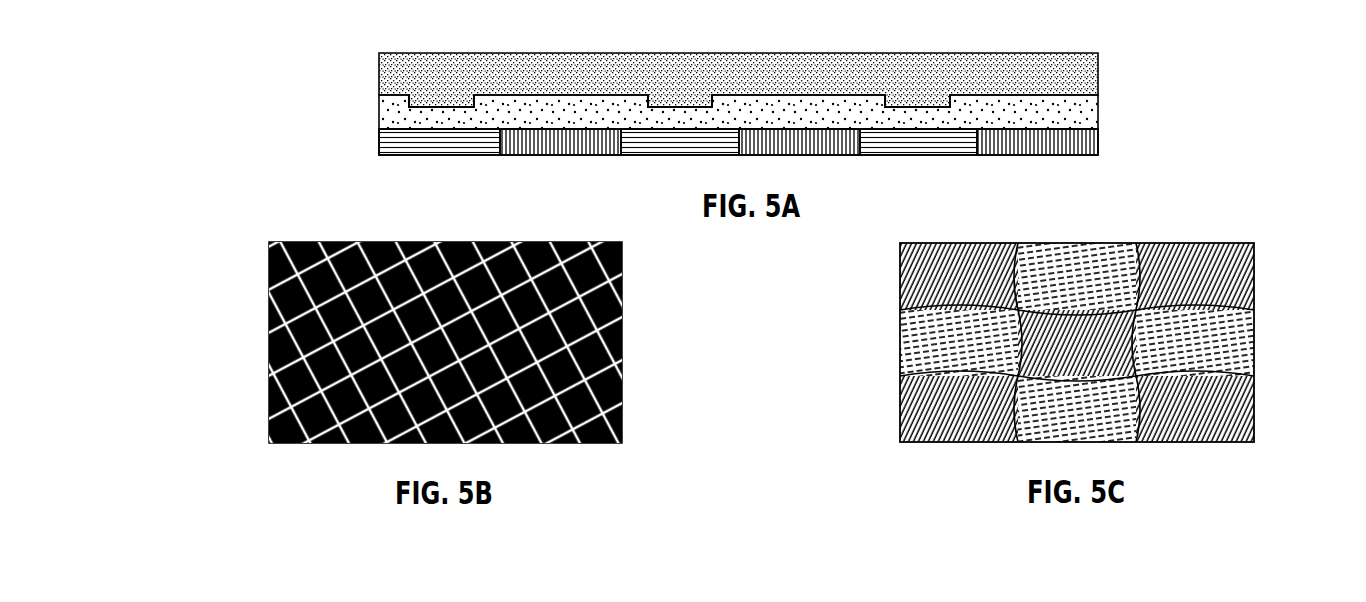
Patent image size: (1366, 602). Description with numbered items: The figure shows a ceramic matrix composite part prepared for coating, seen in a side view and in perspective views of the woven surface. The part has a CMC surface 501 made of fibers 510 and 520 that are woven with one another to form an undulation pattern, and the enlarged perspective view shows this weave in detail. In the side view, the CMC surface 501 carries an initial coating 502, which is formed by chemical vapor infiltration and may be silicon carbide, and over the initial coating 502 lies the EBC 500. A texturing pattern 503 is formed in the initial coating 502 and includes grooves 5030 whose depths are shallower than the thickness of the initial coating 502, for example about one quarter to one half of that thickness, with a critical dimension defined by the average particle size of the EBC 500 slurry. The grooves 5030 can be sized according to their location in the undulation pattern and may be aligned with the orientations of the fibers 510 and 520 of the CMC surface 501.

In FIG. 5A, the EBC 500 is at (395, 80).
In FIG. 5A, the CMC surface 501 is at (370, 152).
In FIG. 5B, the CMC surface 501 is at (444, 334).
In FIG. 5C, the CMC surface 501 is at (1079, 321).
In FIG. 5A, the initial coating 502 is at (392, 115).
In FIG. 5A, the texturing pattern 503 is at (736, 75).
In FIG. 5C, the texturing pattern 503 is at (1085, 321).
In FIG. 5B, the fibers 510 is at (538, 303).
In FIG. 5C, the fibers 510 is at (1023, 265).
In FIG. 5B, the fibers 520 is at (562, 383).
In FIG. 5C, the fibers 520 is at (1092, 268).
In FIG. 5A, the grooves 5030 is at (453, 107).
In FIG. 5C, the grooves 5030 is at (1210, 326).